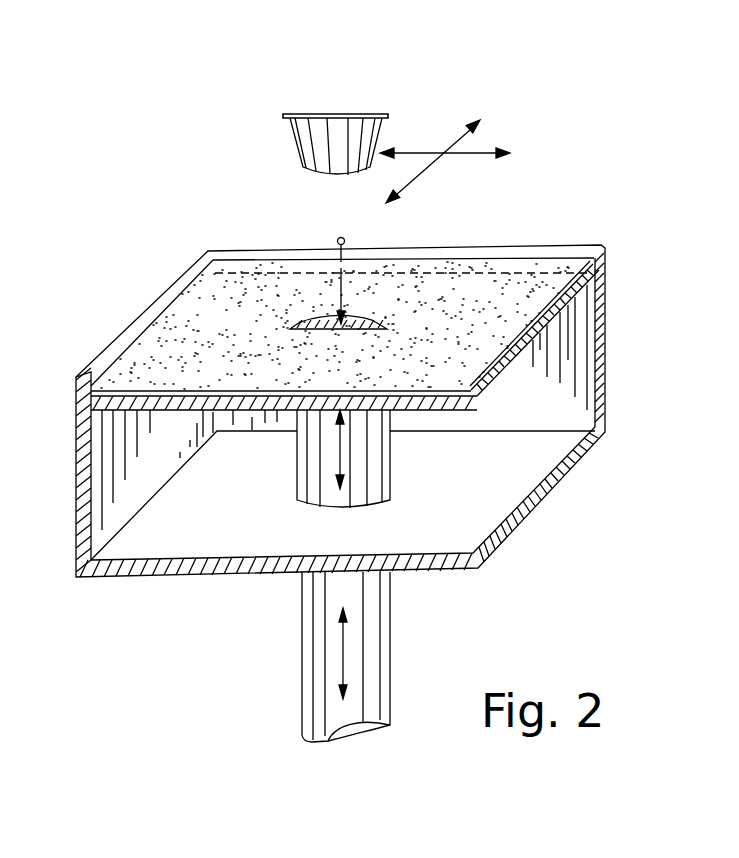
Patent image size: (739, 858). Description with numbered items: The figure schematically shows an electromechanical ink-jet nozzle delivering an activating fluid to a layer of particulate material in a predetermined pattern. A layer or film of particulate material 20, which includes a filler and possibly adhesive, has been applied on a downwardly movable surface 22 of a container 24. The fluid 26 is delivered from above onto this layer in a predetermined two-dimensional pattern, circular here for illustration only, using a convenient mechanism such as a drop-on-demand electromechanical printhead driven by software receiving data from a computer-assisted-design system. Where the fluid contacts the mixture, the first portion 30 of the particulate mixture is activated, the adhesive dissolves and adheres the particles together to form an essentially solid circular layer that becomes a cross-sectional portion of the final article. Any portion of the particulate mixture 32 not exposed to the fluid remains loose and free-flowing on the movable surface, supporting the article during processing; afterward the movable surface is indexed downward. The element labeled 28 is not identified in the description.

The layer of particulate material 20 is at (485, 282).
The downwardly movable surface 22 is at (513, 360).
The container 24 is at (605, 303).
The fluid 26 is at (345, 240).
The powder hopper 28 is at (383, 135).
The first portion of the particulate mixture 30 is at (390, 326).
The portion of the particulate mixture not exposed to the fluid 32 is at (275, 313).